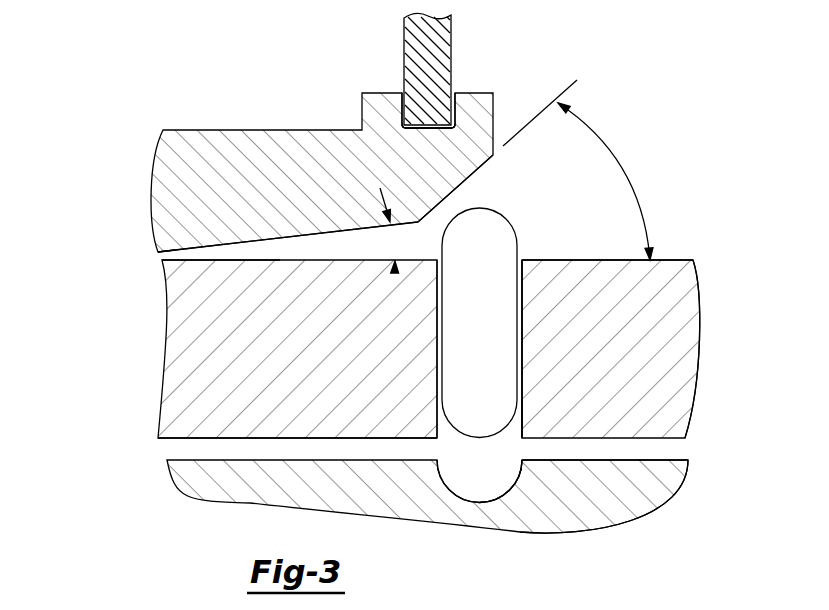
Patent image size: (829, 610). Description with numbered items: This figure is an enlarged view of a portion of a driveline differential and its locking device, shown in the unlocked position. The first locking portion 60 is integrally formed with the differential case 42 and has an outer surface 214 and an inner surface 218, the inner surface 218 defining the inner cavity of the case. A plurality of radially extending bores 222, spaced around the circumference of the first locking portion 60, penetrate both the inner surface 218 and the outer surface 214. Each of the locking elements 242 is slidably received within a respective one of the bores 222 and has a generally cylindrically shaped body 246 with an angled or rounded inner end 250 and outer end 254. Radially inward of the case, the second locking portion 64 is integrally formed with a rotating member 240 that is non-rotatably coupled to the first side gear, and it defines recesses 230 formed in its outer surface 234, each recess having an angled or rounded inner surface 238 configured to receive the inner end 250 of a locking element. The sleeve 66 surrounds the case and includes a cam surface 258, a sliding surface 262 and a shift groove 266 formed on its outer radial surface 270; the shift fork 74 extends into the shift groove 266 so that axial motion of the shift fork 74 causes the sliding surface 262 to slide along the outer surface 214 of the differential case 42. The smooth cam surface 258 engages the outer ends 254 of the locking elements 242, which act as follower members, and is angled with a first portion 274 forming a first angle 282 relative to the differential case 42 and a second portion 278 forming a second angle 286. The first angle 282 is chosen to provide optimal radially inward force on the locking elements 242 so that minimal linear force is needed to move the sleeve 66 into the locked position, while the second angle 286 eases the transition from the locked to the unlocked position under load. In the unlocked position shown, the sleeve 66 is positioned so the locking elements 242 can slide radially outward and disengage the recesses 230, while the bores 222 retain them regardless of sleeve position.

The differential case 42 is at (677, 275).
The first locking portion 60 is at (530, 372).
The second locking portion 64 is at (557, 487).
The sleeve 66 is at (229, 130).
The shift fork 74 is at (446, 63).
The outer surface 214 is at (250, 260).
The inner surface 218 is at (285, 441).
The bores 222 is at (560, 262).
The recesses 230 is at (476, 483).
The outer surface 234 is at (673, 460).
The inner surface 238 is at (515, 480).
The rotating member 240 is at (657, 490).
The locking elements 242 is at (520, 301).
The body 246 is at (478, 337).
The inner end 250 is at (521, 426).
The outer end 254 is at (505, 216).
The cam surface 258 is at (490, 174).
The sliding surface 262 is at (155, 258).
The shift groove 266 is at (408, 131).
The outer radial surface 270 is at (396, 93).
The first portion 274 is at (468, 180).
The second portion 278 is at (333, 247).
The first angle 282 is at (625, 170).
The second angle 286 is at (394, 268).